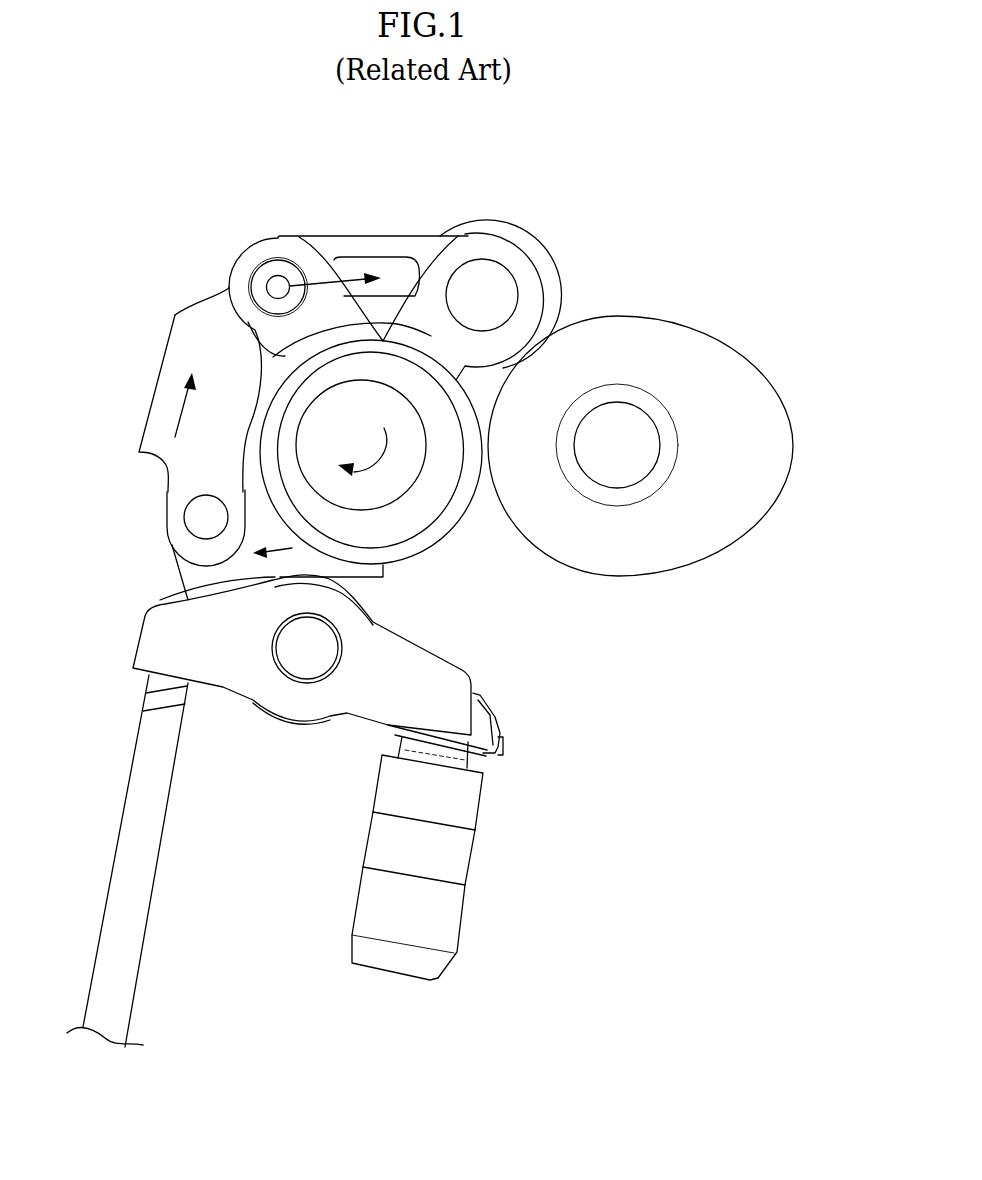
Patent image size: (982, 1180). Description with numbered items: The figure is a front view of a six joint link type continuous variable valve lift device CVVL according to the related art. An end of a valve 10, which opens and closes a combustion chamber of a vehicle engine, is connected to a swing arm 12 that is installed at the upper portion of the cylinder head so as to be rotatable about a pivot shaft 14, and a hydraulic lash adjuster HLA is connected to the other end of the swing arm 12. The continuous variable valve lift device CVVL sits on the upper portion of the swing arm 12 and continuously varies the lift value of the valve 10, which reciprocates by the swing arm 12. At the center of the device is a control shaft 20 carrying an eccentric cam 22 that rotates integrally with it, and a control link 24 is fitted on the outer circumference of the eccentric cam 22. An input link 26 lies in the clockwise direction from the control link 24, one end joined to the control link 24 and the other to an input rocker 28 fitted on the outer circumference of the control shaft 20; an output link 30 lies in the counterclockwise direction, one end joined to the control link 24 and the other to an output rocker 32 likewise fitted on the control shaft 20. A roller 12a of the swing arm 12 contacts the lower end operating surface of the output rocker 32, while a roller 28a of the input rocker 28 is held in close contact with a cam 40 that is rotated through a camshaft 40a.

The valve 10 is at (153, 892).
The swing arm 12 is at (453, 658).
The roller 12a is at (160, 600).
The pivot shaft 14 is at (308, 655).
The control shaft 20 is at (368, 487).
The eccentric cam 22 is at (425, 505).
The control link 24 is at (470, 512).
The input link 26 is at (378, 234).
The input rocker 28 is at (492, 250).
The roller 28a is at (541, 250).
The output link 30 is at (155, 385).
The output rocker 32 is at (185, 573).
The cam 40 is at (693, 325).
The camshaft 40a is at (622, 455).
The hydraulic lash adjuster HLA is at (468, 855).
The continuous variable valve lift device CVVL is at (141, 308).